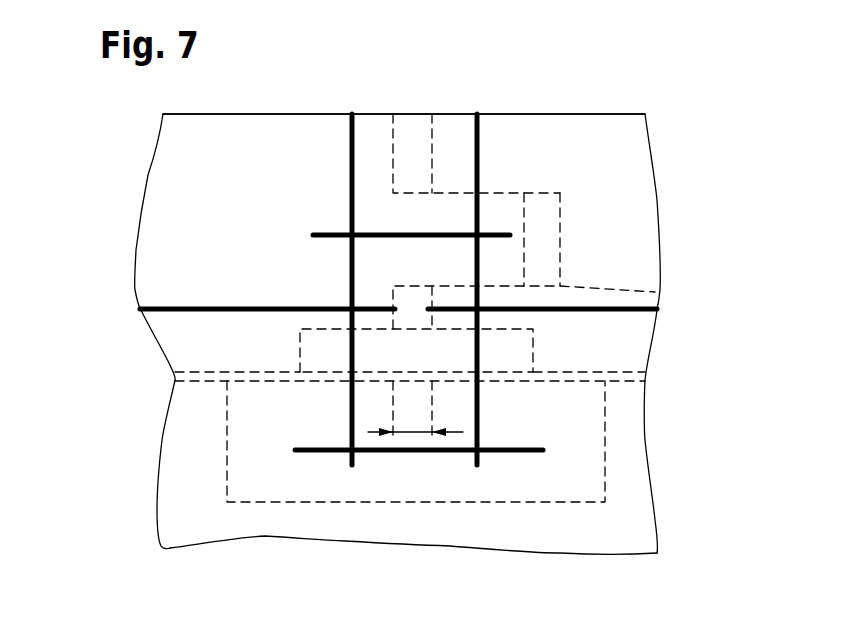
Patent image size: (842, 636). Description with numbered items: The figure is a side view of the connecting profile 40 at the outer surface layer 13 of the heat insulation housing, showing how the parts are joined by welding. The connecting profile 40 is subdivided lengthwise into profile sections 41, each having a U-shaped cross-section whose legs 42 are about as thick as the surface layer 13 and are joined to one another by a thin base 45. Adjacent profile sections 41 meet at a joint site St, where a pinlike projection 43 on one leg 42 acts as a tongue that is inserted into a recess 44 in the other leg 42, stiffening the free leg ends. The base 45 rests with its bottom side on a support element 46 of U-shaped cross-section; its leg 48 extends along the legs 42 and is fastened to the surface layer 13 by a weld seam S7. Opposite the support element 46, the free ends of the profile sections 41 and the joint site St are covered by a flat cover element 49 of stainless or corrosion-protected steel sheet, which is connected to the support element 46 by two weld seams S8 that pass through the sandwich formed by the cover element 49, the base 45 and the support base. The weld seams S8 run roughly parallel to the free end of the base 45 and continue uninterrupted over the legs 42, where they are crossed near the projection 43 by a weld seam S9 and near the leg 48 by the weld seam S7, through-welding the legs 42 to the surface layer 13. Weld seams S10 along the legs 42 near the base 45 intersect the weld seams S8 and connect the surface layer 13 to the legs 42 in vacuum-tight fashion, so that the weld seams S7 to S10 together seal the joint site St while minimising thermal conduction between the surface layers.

The surface layer 13 is at (203, 518).
The connecting profile 40 is at (218, 114).
The profile section 41 is at (180, 161).
The leg 42 is at (175, 215).
The pinlike projection 43 is at (655, 292).
The recess 44 is at (542, 243).
The base 45 is at (170, 390).
The support element 46 is at (458, 503).
The leg 48 is at (560, 478).
The cover element 49 is at (505, 354).
The weld seam S7 is at (322, 453).
The weld seams S8 is at (351, 120).
The weld seam S9 is at (326, 232).
The weld seams S10 is at (176, 312).
The joint site St is at (415, 409).